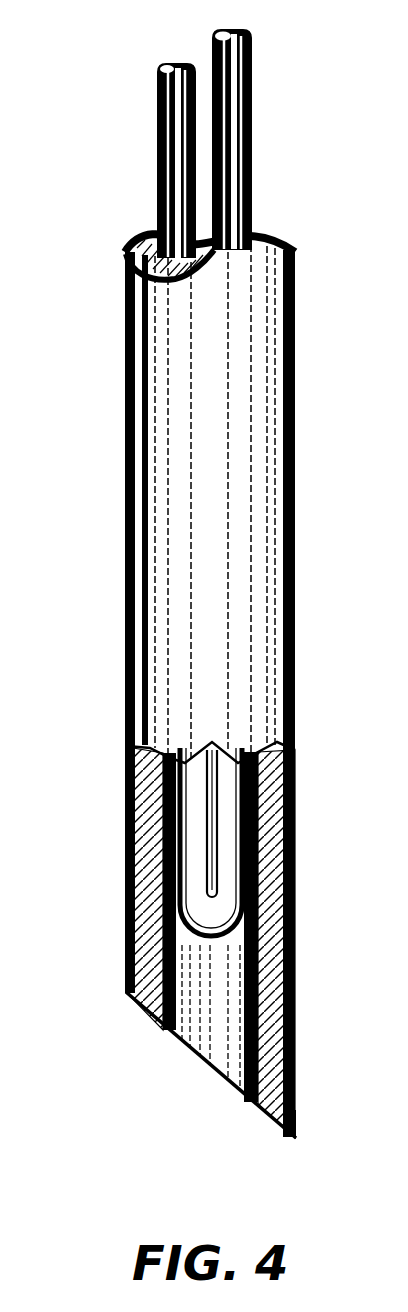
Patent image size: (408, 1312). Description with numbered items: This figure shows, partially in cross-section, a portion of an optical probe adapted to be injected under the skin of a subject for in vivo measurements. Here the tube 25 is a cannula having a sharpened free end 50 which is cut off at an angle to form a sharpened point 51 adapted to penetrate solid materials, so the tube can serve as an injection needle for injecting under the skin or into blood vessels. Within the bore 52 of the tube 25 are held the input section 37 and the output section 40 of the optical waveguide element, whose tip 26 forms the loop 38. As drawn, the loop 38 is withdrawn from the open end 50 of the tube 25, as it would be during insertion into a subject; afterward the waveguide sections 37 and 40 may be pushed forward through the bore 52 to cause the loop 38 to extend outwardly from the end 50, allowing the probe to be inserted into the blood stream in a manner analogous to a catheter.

The tube 25 is at (197, 691).
The tip 26 is at (222, 957).
The input section 37 is at (250, 98).
The loop 38 is at (230, 932).
The output section 40 is at (157, 163).
The sharpened free end 50 is at (163, 1024).
The sharpened point 51 is at (290, 1137).
The bore 52 is at (200, 1040).